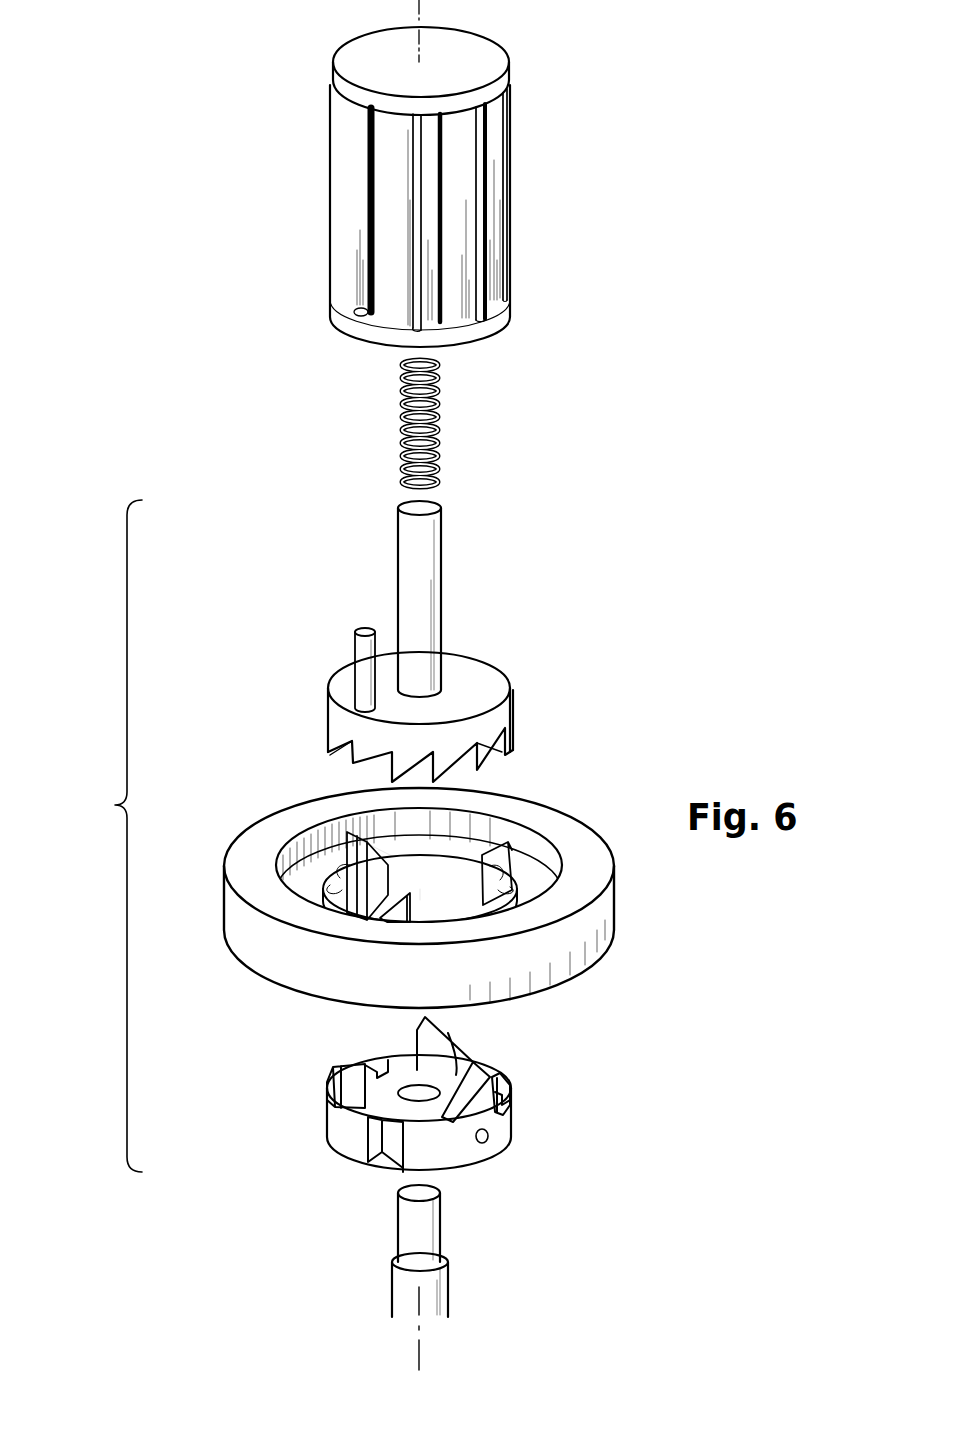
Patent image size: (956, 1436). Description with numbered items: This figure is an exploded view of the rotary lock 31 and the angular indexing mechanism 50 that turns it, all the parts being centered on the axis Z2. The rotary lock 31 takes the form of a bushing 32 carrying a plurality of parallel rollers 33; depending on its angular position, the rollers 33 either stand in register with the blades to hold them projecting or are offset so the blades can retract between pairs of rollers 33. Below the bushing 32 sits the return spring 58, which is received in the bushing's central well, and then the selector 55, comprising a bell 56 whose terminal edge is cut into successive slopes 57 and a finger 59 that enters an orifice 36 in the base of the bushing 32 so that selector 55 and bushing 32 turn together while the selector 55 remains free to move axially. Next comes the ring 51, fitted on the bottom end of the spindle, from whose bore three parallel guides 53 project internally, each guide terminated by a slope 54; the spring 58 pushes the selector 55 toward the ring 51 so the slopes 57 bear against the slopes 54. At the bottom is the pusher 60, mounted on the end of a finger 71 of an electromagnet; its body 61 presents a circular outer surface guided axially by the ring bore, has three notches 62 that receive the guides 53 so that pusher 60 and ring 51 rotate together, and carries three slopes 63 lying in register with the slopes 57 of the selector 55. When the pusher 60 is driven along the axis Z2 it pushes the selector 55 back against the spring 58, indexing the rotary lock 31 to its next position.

The rotary lock 31 is at (407, 196).
The bushing 32 is at (483, 52).
The rollers 33 is at (355, 197).
The orifice 36 is at (356, 318).
The return spring 58 is at (440, 415).
The angular indexing mechanism 50 is at (364, 859).
The selector 55 is at (425, 647).
The bell 56 is at (426, 712).
The slopes 57 is at (345, 765).
The finger 59 is at (360, 645).
The ring 51 is at (406, 898).
The guides 53 is at (505, 860).
The slopes 54 is at (394, 847).
The pusher 60 is at (430, 1109).
The cam body 61 is at (455, 1155).
The notches 62 is at (364, 1057).
The slopes 63 is at (447, 1038).
The finger 71 is at (410, 1230).
The axis Z2 is at (417, 1352).